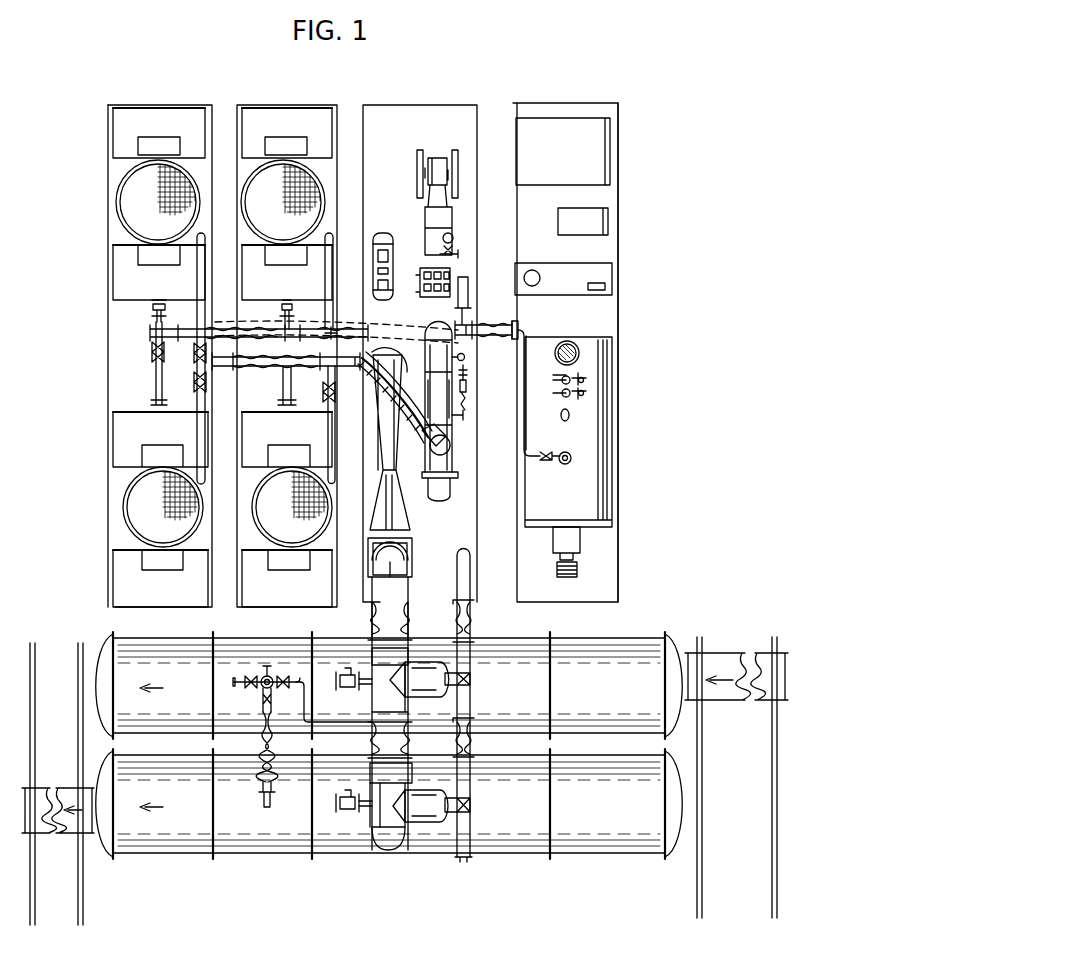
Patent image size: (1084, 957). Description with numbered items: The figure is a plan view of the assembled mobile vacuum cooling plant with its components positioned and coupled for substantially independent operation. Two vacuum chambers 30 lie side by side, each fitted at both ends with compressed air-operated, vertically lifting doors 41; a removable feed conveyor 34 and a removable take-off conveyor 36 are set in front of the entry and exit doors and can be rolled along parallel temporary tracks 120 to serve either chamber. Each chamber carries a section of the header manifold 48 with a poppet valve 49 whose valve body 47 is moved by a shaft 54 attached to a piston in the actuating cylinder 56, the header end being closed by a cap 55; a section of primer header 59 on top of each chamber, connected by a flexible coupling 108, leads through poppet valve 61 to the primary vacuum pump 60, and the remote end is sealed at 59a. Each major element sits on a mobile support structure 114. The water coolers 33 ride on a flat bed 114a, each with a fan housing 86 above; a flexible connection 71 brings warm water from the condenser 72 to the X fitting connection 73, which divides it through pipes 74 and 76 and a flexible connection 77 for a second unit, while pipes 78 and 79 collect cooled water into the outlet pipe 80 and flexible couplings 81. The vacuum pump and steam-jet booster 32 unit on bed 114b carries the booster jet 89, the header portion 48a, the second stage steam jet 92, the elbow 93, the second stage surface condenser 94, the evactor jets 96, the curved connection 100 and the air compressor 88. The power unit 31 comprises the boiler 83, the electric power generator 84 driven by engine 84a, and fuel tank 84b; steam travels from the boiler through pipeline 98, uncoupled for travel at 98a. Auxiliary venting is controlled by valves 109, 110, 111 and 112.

The vacuum chamber 30 is at (578, 640).
The power unit 31 is at (616, 323).
The vacuum pump and steam-jet booster 32 is at (468, 374).
The water cooler 33 is at (337, 204).
The feed conveyor 34 is at (714, 658).
The take-off conveyor 36 is at (74, 830).
The doors 41 is at (697, 648).
The valve body 47 is at (372, 644).
The header manifold 48 is at (382, 636).
The header portion 48a is at (398, 568).
The poppet valve 49 is at (428, 670).
The shaft 54 is at (358, 686).
The cap 55 is at (400, 852).
The actuating cylinder 56 is at (348, 674).
The primer header 59 is at (470, 308).
The capped end of primary header 59a is at (466, 862).
The primary vacuum pump 60 is at (452, 238).
The poppet valve 61 is at (466, 681).
The flexible connection 71 is at (418, 410).
The condenser 72 is at (432, 452).
The connection 73 is at (196, 360).
The pipe 74 is at (197, 399).
The pipe 76 is at (206, 300).
The flexible connection 77 is at (240, 370).
The pipe 78 is at (283, 394).
The pipe 79 is at (154, 312).
The outlet pipe 80 is at (228, 337).
The flexible couplings 81 is at (370, 345).
The boiler 83 is at (610, 487).
The electric power generator 84 is at (604, 276).
The engine 84a is at (608, 222).
The fuel tank 84b is at (608, 163).
The housing 86 is at (130, 203).
The air compressor 88 is at (394, 278).
The booster jet 89 is at (408, 530).
The second stage steam jet 92 is at (468, 392).
The elbow 93 is at (468, 413).
The second stage surface condenser 94 is at (452, 418).
The evactor jets 96 is at (466, 357).
The pipeline 98 is at (528, 340).
The flexible coupling 98a is at (518, 330).
The curved connection 100 is at (450, 450).
The flexible coupling 108 is at (236, 326).
The valve 109 is at (267, 676).
The valve 110 is at (248, 682).
The valve 111 is at (260, 698).
The valve 112 is at (287, 680).
The mobile support structure 114 is at (618, 566).
The flat bed 114a is at (112, 405).
The bed 114b is at (477, 545).
The temporary tracks 120 is at (36, 718).